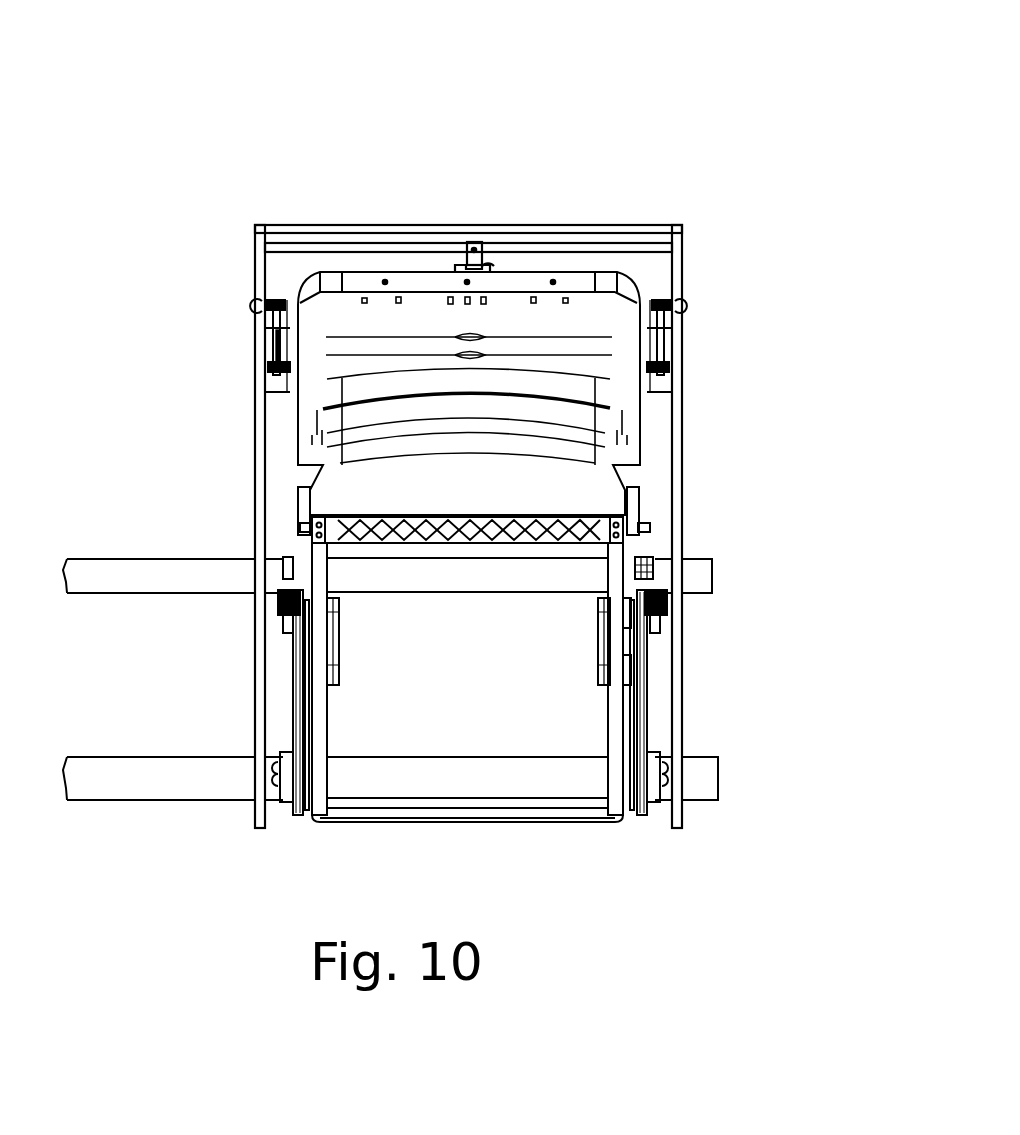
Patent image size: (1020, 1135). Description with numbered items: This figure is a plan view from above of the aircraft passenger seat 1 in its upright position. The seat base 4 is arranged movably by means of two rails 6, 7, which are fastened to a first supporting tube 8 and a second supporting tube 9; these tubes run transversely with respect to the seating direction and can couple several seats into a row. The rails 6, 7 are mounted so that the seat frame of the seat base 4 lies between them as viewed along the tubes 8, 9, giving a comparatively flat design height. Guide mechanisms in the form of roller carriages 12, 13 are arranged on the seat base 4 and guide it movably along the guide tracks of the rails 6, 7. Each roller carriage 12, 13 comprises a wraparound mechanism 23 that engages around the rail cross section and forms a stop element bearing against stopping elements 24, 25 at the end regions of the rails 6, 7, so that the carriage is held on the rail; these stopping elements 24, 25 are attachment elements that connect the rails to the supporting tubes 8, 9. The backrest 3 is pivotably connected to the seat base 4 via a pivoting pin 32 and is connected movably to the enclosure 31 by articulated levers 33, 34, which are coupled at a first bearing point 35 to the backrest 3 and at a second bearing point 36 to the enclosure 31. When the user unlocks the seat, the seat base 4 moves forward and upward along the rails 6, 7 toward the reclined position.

The aircraft passenger seat 1 is at (699, 104).
The backrest 3 is at (622, 272).
The seat base 4 is at (642, 542).
The rail 6 is at (647, 690).
The rail 7 is at (295, 680).
The first supporting tube 8 is at (718, 780).
The second supporting tube 9 is at (712, 580).
The roller carriage 12 is at (598, 677).
The roller carriage 13 is at (340, 675).
The wraparound mechanism 23 is at (625, 620).
The stopping element 24 is at (285, 618).
The stopping element 25 is at (283, 750).
The enclosure 31 is at (255, 262).
The pivoting pin 32 is at (628, 540).
The articulated lever 33 is at (668, 340).
The articulated lever 34 is at (272, 340).
The first bearing point 35 is at (275, 372).
The second bearing point 36 is at (272, 312).